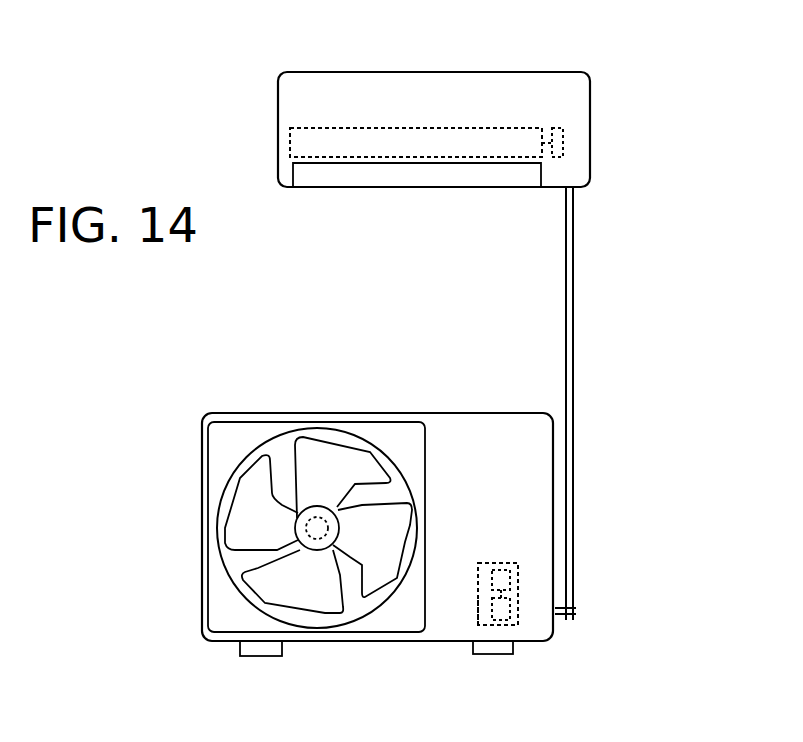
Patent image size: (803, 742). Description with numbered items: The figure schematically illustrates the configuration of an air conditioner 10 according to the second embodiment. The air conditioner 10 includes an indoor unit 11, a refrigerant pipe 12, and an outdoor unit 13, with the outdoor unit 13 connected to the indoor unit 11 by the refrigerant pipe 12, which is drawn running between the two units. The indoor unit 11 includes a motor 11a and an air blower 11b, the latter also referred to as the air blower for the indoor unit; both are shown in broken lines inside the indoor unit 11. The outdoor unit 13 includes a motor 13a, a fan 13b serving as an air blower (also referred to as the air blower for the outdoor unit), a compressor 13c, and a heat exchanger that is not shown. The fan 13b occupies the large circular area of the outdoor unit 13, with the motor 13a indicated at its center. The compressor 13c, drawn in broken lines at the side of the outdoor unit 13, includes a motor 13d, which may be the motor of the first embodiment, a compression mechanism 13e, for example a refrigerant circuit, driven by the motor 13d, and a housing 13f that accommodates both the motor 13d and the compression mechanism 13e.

The air conditioner 10 is at (121, 103).
The indoor unit 11 is at (428, 72).
The motor 11a is at (563, 141).
The air blower 11b is at (290, 143).
The refrigerant pipe 12 is at (575, 322).
The outdoor unit 13 is at (370, 413).
The motor 13a is at (317, 538).
The fan 13b is at (253, 527).
The compressor 13c is at (475, 548).
The motor 13d is at (500, 612).
The compression mechanism 13e is at (500, 580).
The housing 13f is at (478, 614).